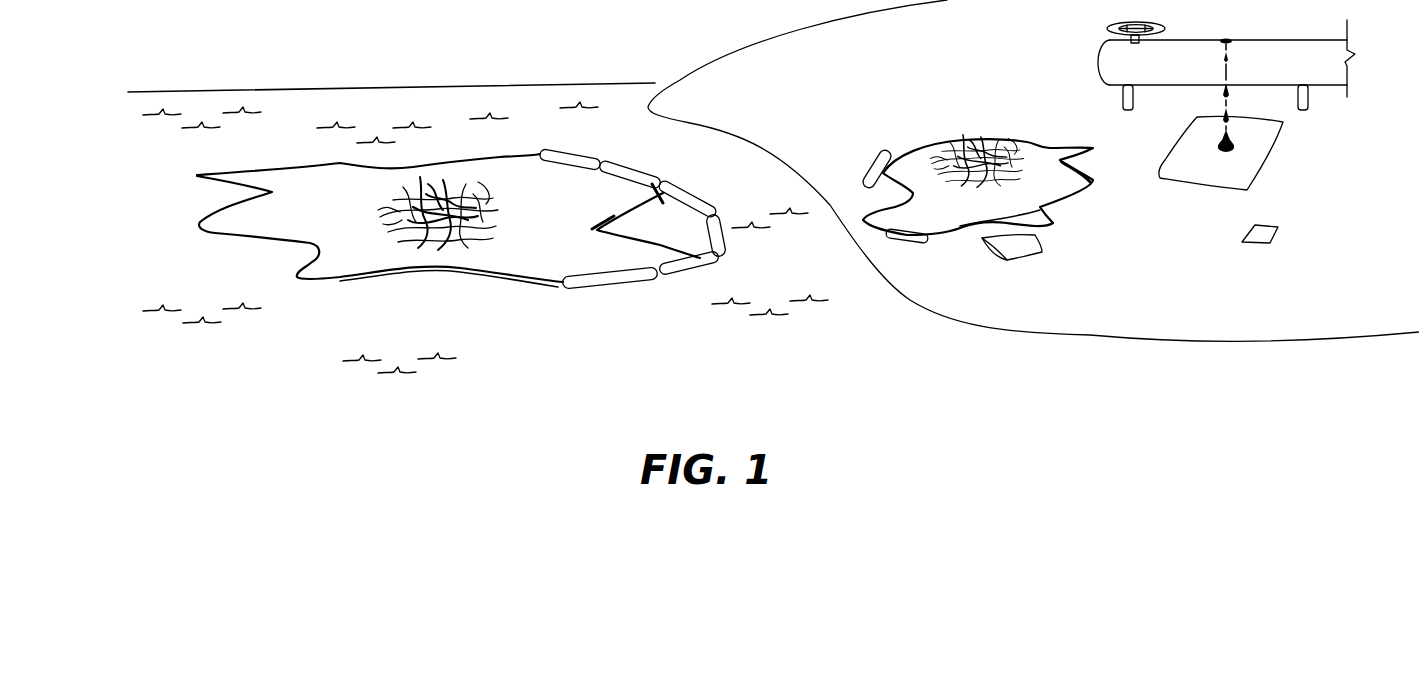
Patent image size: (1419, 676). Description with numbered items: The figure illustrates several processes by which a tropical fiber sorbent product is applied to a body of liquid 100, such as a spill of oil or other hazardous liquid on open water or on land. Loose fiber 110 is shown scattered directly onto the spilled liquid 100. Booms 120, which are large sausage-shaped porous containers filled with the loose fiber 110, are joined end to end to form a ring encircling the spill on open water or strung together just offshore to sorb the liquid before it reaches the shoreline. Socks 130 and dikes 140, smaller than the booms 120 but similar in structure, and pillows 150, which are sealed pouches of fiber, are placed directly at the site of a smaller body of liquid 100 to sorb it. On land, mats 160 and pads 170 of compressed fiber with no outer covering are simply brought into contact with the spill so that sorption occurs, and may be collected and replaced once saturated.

The body of liquid 100 is at (340, 260).
The loose fiber 110 is at (387, 194).
The booms 120 is at (722, 233).
The socks 130 is at (865, 182).
The dikes 140 is at (897, 241).
The pillows 150 is at (1017, 259).
The mats 160 is at (1162, 153).
The pads 170 is at (1277, 233).